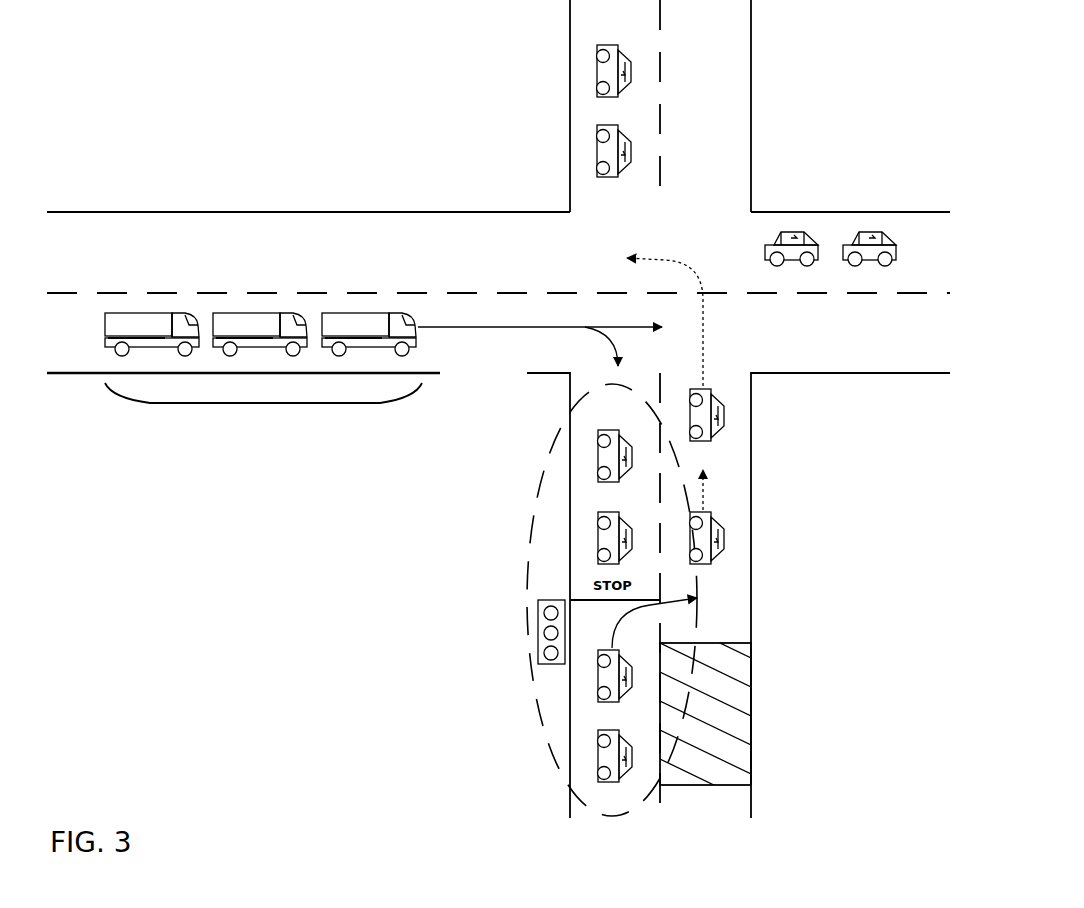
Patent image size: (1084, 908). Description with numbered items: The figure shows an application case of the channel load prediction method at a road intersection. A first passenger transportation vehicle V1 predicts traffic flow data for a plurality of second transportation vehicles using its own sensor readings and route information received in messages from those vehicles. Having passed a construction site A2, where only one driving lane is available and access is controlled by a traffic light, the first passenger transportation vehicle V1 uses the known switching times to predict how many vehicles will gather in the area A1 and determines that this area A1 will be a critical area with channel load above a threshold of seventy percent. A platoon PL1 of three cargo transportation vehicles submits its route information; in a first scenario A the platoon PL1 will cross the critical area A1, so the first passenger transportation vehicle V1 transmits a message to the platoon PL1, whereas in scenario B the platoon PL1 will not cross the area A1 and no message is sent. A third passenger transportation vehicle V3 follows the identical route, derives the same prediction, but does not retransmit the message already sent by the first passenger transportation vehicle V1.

The first passenger transportation vehicle V1 is at (725, 412).
The third passenger transportation vehicle V3 is at (725, 525).
The critical area A1 is at (527, 553).
The construction site A2 is at (752, 712).
The platoon PL1 is at (262, 405).
The first scenario A is at (601, 346).
The scenario B is at (540, 316).